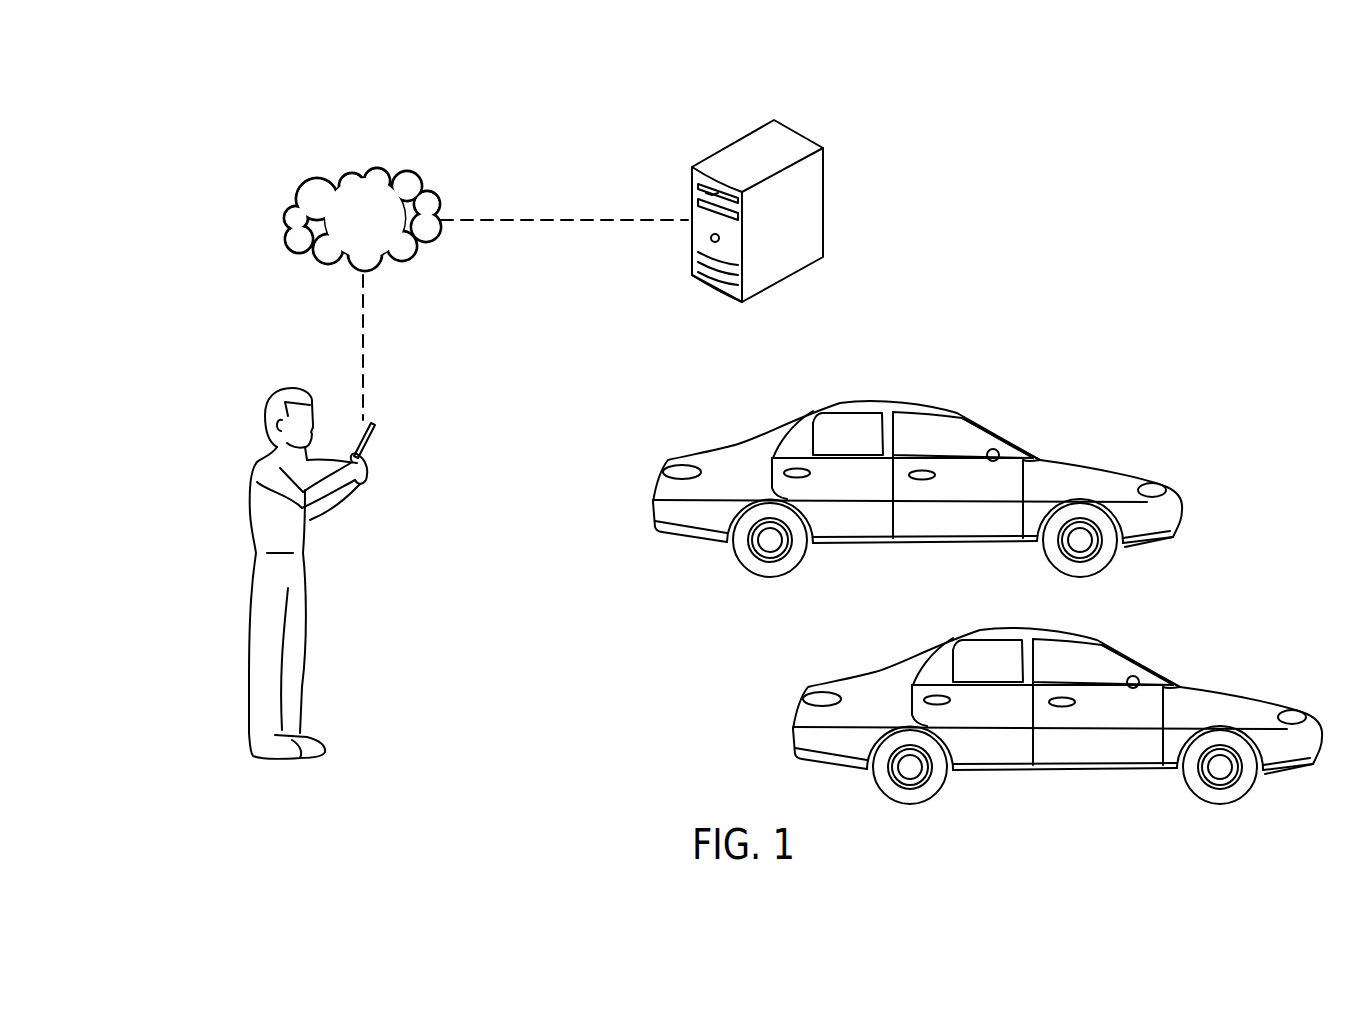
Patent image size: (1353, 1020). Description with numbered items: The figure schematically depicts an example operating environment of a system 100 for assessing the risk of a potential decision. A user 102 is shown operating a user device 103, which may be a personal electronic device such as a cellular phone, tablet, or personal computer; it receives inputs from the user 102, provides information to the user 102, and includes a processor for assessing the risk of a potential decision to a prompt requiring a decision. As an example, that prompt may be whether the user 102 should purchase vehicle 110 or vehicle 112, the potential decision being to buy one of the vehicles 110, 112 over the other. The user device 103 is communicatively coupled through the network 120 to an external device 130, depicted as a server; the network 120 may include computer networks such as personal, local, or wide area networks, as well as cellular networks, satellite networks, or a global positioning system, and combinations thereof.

The system 100 is at (147, 152).
The user 102 is at (248, 477).
The user device 103 is at (373, 430).
The vehicle 110 is at (1075, 462).
The vehicle 112 is at (1215, 689).
The network 120 is at (380, 173).
The external device 130 is at (793, 132).